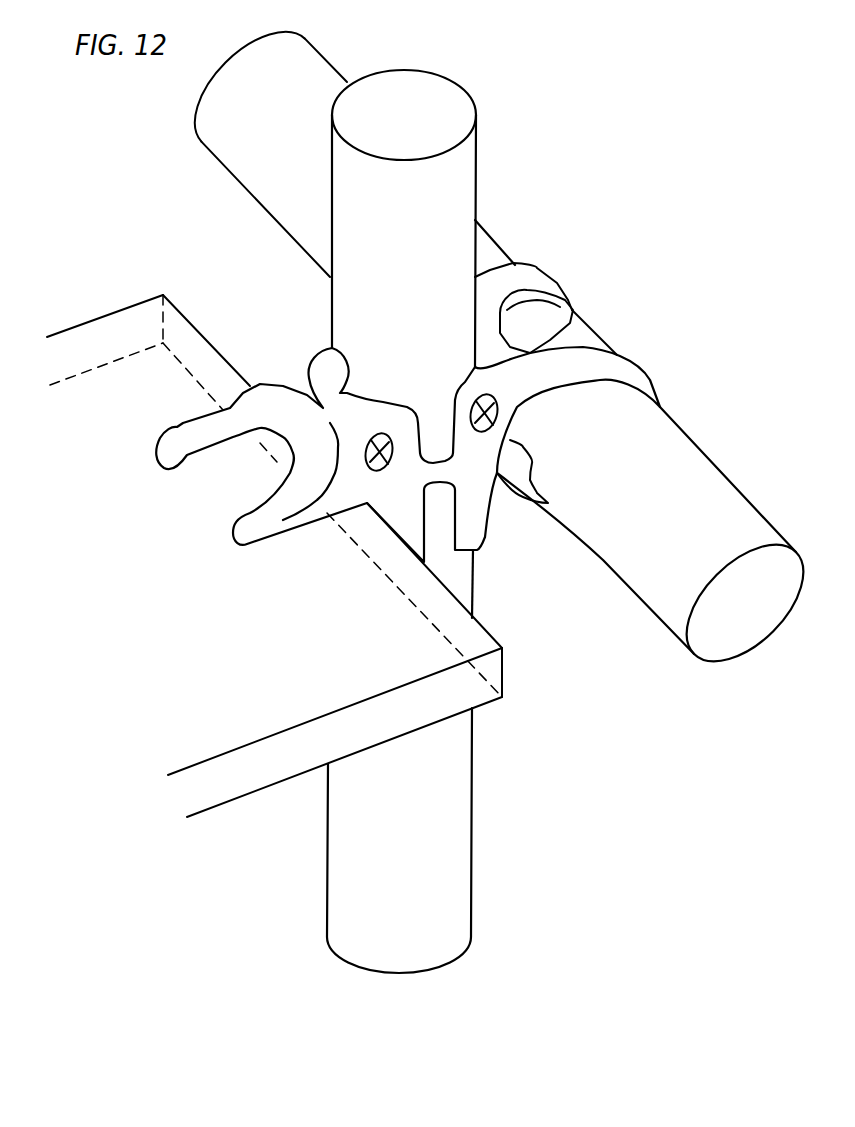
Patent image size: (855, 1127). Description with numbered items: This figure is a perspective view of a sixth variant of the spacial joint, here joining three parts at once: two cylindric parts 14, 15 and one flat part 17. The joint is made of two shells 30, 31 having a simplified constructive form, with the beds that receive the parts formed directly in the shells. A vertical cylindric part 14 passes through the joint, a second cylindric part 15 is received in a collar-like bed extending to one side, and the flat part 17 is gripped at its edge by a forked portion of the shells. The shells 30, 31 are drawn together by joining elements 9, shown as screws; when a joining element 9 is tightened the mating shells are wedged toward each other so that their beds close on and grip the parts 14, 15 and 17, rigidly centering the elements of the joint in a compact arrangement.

The joining element 9 is at (370, 437).
The cylindric part 14 is at (448, 860).
The cylindric part 15 is at (665, 597).
The flat part 17 is at (248, 718).
The shell 30 is at (610, 363).
The shell 31 is at (517, 478).